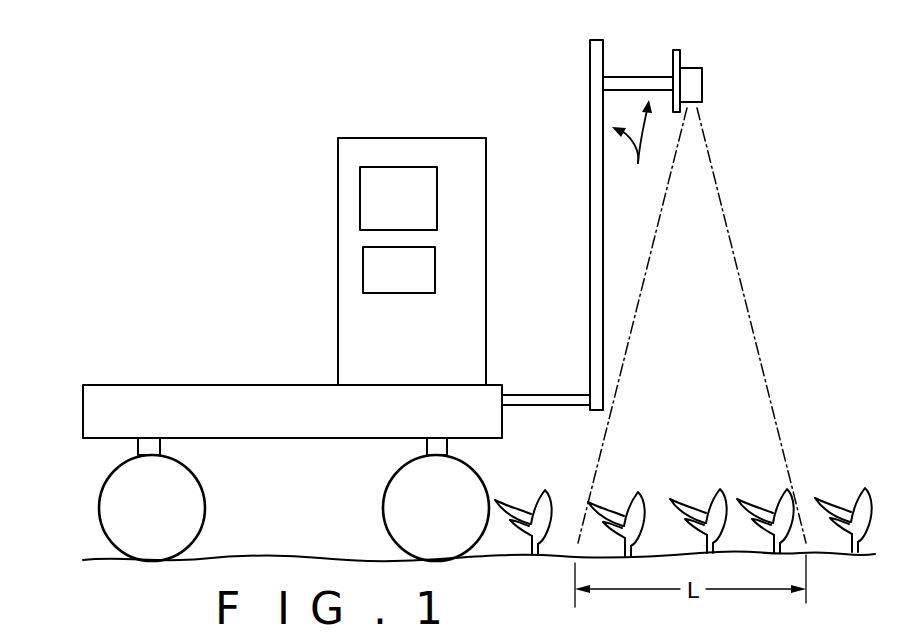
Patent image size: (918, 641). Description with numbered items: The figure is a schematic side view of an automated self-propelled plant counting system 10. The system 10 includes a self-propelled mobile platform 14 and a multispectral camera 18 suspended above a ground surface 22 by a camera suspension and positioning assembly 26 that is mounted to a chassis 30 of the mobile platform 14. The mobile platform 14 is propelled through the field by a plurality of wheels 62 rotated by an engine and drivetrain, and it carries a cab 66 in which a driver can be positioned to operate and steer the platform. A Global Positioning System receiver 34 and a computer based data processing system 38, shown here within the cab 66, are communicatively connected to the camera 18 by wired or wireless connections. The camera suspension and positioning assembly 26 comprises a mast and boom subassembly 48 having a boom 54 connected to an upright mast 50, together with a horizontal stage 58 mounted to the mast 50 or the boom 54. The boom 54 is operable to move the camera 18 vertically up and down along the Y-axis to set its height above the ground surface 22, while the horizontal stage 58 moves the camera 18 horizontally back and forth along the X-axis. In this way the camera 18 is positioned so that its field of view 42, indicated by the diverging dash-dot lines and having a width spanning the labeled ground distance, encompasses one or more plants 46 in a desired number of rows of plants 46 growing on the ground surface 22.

The system 10 is at (400, 55).
The self-propelled mobile platform 14 is at (302, 297).
The multispectral camera 18 is at (700, 68).
The ground surface 22 is at (258, 557).
The camera suspension and positioning assembly 26 is at (568, 40).
The chassis 30 is at (263, 405).
The Global Positioning System (GPS) receiver 34 is at (437, 193).
The computer based data processing system 38 is at (435, 272).
The field of view 42 is at (627, 358).
The plants 46 is at (525, 518).
The mast and boom subassembly 48 is at (632, 145).
The mast 50 is at (590, 143).
The boom 54 is at (641, 77).
The horizontal stage 58 is at (680, 52).
The wheels 62 is at (99, 509).
The cab 66 is at (386, 148).